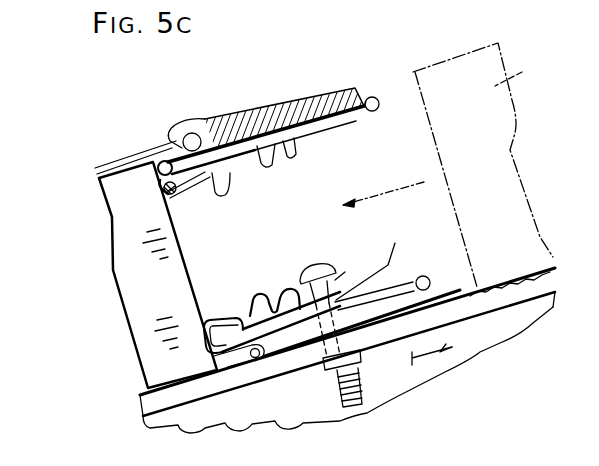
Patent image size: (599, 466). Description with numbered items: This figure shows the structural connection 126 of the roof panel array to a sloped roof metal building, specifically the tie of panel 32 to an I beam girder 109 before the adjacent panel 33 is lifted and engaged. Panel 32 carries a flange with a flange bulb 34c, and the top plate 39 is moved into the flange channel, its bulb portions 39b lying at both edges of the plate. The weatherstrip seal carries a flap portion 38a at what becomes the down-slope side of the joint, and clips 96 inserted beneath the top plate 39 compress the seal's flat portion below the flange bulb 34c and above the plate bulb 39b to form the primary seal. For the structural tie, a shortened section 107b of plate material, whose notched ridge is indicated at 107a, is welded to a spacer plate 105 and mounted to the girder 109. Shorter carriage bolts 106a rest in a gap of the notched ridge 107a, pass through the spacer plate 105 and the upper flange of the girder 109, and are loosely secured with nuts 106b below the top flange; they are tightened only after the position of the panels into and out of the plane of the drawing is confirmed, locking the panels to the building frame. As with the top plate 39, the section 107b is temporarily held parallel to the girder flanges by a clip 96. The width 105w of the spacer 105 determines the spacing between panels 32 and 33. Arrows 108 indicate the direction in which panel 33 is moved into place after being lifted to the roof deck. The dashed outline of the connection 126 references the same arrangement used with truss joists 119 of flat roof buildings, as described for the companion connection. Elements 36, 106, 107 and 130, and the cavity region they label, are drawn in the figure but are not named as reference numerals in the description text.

The panel 32 is at (128, 202).
The thin plate 36 is at (166, 148).
The flap portion 38a is at (188, 131).
The bulb portions 39b is at (372, 97).
The top plate 39 is at (290, 160).
The clips 96 is at (247, 314).
The spacer plate 105 is at (347, 342).
The width of the spacers 105w is at (274, 403).
The screw 106 is at (308, 265).
The shorter carriage bolts 106a is at (345, 272).
The nuts 106b is at (360, 370).
The lever arm 107 is at (392, 280).
The notched ridge 107a is at (375, 260).
The section 107b is at (428, 280).
The arrows 108 is at (384, 194).
The girder 109 is at (509, 337).
The truss joist 119 is at (369, 362).
The structural connection 126 is at (446, 34).
The cavity 130 is at (331, 163).
The panel 33 is at (524, 72).
The flange bulb 34c is at (214, 357).